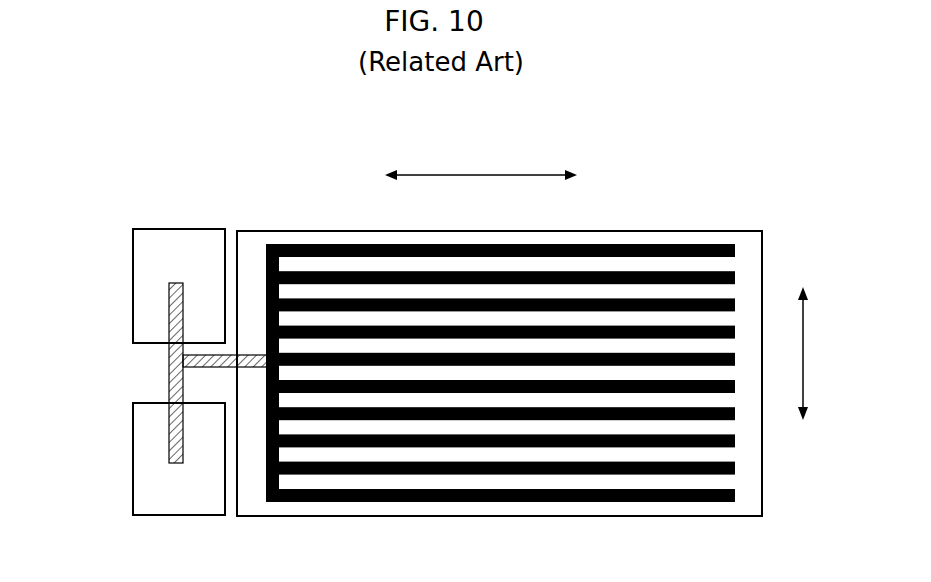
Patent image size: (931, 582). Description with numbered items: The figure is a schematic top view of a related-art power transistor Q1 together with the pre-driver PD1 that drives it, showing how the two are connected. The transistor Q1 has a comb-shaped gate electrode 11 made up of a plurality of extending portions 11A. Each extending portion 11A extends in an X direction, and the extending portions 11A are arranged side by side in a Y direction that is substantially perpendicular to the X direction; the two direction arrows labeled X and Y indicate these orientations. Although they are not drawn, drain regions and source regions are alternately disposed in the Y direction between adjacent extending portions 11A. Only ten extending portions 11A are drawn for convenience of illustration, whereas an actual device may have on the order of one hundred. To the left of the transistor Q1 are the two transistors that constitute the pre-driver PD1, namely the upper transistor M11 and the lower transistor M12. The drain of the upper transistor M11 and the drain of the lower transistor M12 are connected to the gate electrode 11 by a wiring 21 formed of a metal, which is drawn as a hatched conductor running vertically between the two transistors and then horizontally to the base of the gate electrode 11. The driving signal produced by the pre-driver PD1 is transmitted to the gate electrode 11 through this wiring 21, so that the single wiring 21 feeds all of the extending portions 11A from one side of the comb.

The pre-driver PD1 is at (134, 200).
The upper transistor M11 is at (133, 245).
The lower transistor M12 is at (133, 437).
The wiring 21 is at (169, 392).
The transistor Q1 is at (673, 158).
The gate electrode 11 is at (500, 340).
The extending portions 11A is at (697, 244).
The X direction X is at (481, 165).
The Y direction Y is at (813, 353).